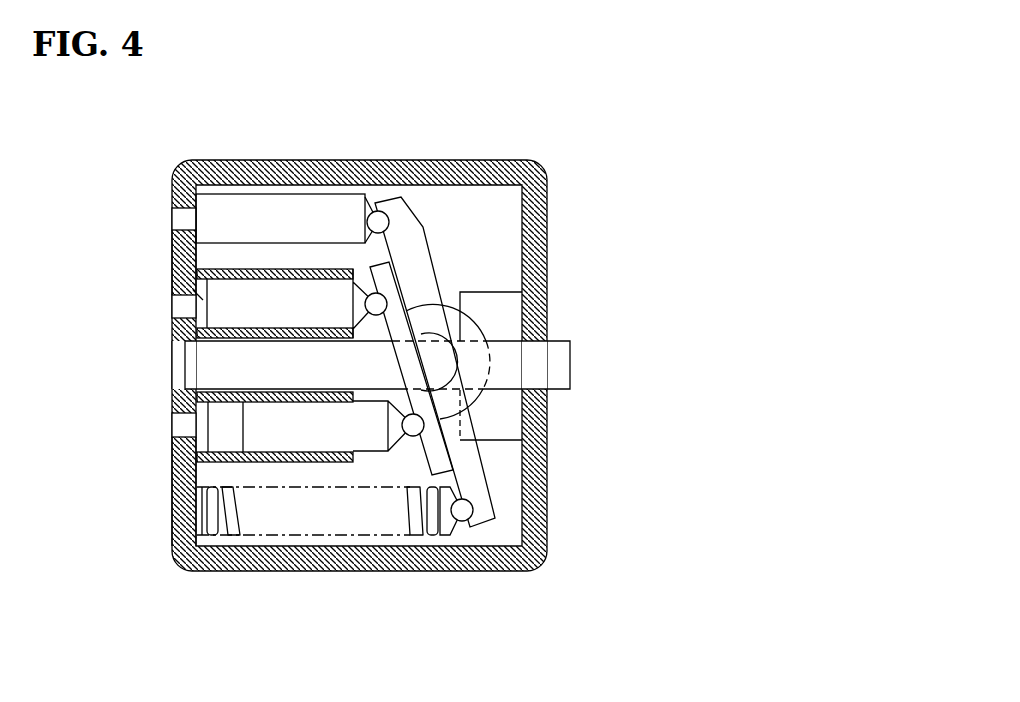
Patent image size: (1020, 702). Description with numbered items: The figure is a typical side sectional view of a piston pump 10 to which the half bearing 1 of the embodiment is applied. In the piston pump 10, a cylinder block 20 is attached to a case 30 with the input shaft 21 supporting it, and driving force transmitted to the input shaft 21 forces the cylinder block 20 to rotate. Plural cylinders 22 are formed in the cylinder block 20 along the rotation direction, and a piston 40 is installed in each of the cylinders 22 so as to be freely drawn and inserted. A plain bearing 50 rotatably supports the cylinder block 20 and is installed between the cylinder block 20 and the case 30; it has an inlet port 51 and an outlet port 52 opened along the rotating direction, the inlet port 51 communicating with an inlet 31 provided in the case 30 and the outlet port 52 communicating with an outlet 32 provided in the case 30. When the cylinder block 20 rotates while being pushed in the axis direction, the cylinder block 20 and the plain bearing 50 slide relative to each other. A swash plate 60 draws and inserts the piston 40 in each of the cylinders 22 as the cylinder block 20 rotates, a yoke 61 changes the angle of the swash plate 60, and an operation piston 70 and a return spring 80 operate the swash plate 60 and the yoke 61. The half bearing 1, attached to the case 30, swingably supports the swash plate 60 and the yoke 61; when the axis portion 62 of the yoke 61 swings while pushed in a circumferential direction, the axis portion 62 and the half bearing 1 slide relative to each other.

The half bearing 1 is at (490, 330).
The piston pump 10 is at (536, 150).
The cylinder block 20 is at (273, 268).
The input shaft 21 is at (554, 366).
The cylinders 22 is at (223, 438).
The case 30 is at (547, 214).
The inlet 31 is at (180, 308).
The outlet 32 is at (177, 420).
The piston 40 is at (303, 297).
The plain bearing 50 is at (170, 255).
The inlet port 51 is at (170, 283).
The outlet port 52 is at (203, 428).
The swash plate 60 is at (437, 458).
The yoke 61 is at (488, 483).
The axis portion 62 is at (492, 376).
The operation piston 70 is at (235, 212).
The return spring 80 is at (410, 528).